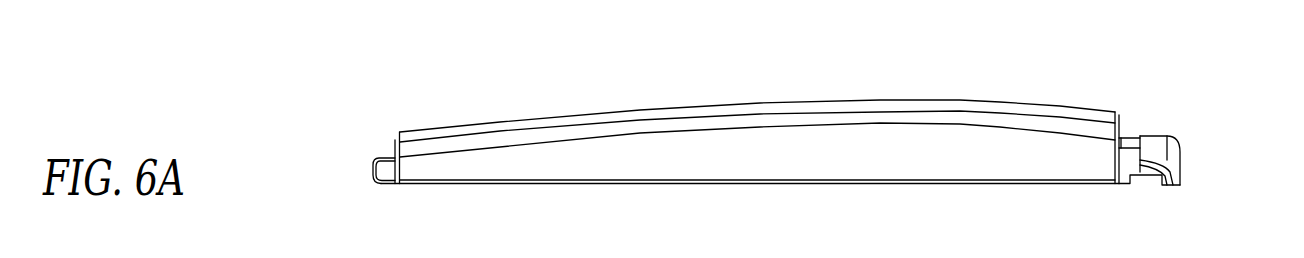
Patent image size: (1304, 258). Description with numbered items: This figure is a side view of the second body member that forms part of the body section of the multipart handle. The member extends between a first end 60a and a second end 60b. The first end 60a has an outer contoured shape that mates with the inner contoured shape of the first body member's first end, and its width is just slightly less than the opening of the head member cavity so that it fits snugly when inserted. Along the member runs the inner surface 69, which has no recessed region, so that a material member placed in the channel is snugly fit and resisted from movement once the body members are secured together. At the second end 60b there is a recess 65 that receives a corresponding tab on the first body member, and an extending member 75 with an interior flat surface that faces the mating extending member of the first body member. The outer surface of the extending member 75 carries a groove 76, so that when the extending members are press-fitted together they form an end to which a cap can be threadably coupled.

The first end of second body member 60a is at (329, 134).
The second end of second body member 60b is at (1201, 106).
The inner surface of second body member 69 is at (710, 185).
The extending member 75 is at (1163, 148).
The groove 76 is at (1122, 127).
The recess 65 is at (1145, 187).